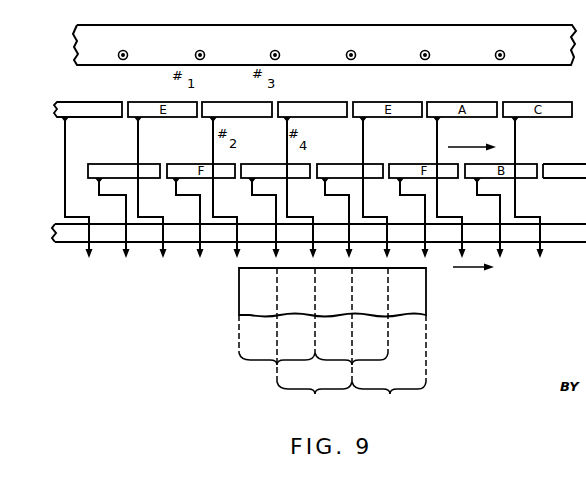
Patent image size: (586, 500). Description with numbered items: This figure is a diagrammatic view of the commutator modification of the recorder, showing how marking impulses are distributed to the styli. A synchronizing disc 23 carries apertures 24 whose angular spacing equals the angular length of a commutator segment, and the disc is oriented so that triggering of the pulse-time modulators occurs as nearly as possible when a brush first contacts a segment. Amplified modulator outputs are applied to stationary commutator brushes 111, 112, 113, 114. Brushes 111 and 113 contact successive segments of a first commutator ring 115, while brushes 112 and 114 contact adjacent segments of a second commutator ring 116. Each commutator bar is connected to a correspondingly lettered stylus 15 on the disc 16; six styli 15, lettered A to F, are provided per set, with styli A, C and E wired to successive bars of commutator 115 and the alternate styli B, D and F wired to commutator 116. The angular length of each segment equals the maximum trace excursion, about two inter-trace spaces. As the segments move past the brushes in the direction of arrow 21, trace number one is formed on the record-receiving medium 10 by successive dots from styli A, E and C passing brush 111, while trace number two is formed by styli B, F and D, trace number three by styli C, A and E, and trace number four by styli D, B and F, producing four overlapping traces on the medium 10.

The synchronizing disc 23 is at (140, 33).
The apertures 24 is at (348, 52).
The first commutator ring 115 is at (118, 102).
The second commutator ring 116 is at (124, 164).
The stationary commutator brush 111 is at (200, 84).
The stationary commutator brush 113 is at (281, 84).
The stationary commutator brush 112 is at (243, 143).
The stationary commutator brush 114 is at (306, 143).
The arrow 21 is at (448, 150).
The disc 16 is at (68, 242).
The styli 15 is at (502, 254).
The record-receiving medium 10 is at (239, 297).